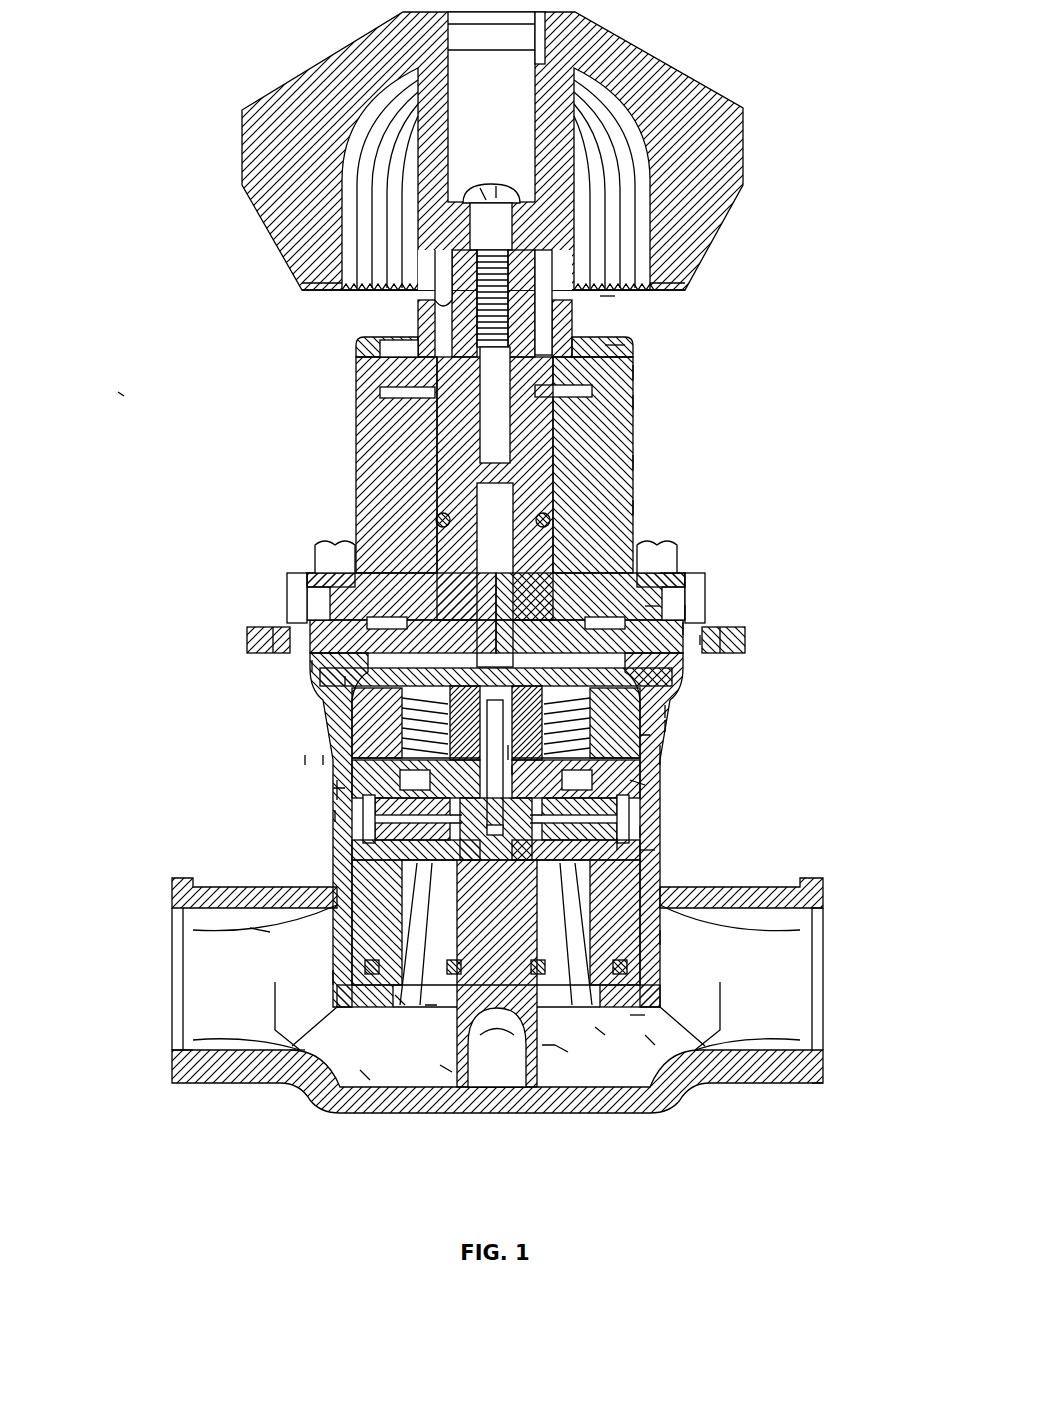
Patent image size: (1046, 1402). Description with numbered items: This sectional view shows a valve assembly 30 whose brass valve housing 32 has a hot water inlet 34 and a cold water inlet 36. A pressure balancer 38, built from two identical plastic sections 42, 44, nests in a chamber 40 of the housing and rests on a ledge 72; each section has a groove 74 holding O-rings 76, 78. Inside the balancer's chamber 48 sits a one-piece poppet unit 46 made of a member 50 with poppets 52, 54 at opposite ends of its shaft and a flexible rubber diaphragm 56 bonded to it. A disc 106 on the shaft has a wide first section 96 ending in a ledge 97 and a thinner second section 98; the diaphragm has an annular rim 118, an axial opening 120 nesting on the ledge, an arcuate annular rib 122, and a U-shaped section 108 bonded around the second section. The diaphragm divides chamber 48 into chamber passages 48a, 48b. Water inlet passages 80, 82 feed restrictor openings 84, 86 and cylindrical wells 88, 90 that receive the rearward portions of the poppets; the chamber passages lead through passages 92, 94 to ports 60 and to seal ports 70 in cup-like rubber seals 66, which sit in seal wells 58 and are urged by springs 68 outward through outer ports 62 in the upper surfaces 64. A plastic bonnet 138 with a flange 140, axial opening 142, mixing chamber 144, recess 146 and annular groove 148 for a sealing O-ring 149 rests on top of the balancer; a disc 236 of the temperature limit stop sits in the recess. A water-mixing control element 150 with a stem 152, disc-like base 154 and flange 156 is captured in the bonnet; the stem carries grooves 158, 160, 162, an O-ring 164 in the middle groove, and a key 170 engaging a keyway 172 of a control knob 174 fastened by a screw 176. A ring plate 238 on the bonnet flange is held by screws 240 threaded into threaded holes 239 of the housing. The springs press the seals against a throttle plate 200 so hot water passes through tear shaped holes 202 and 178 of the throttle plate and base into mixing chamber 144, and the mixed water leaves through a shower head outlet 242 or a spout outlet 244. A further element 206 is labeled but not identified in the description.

The valve assembly 30 is at (122, 394).
The valve housing 32 is at (822, 1086).
The hot water inlet 34 is at (183, 1052).
The cold water inlet 36 is at (822, 910).
The pressure balancer 38 is at (645, 832).
The chamber 40 is at (178, 975).
The plastic section 42 is at (332, 976).
The plastic section 44 is at (660, 937).
The one-piece poppet unit 46 is at (632, 845).
The chamber 48 is at (265, 930).
The chamber passage 48a is at (365, 1075).
The chamber passage 48b is at (562, 1050).
The member 50 is at (345, 850).
The poppet 52 is at (345, 866).
The poppet 54 is at (652, 856).
The flexible diaphragm 56 is at (453, 672).
The seal well 58 is at (305, 760).
The port 60 is at (342, 790).
The outer port 62 is at (345, 705).
The upper surface 64 is at (350, 740).
The cup-like rubber seal 66 is at (325, 760).
The spring 68 is at (336, 788).
The port 70 is at (330, 682).
The ledge 72 is at (652, 1040).
The groove 74 is at (430, 1010).
The O-ring 76 is at (296, 1050).
The O-ring 78 is at (637, 1020).
The water inlet passage 80 is at (400, 1000).
The water inlet passage 82 is at (600, 1032).
The restrictor opening 84 is at (425, 880).
The restrictor opening 86 is at (645, 926).
The cylindrical well 88 is at (345, 828).
The cylindrical well 90 is at (645, 805).
The passage 92 is at (335, 816).
The passage 94 is at (645, 785).
The first section 96 is at (514, 770).
The ledge 97 is at (512, 752).
The second section 98 is at (520, 748).
The disc 106 is at (545, 817).
The U shaped section 108 is at (476, 777).
The annular circular rim 118 is at (487, 672).
The axial opening 120 is at (496, 829).
The arcuate annular rib 122 is at (534, 672).
The plastic bonnet 138 is at (636, 425).
The flange 140 is at (690, 585).
The axial opening 142 is at (636, 372).
The chamber 144 is at (290, 612).
The recess 146 is at (612, 345).
The annular groove 148 is at (690, 628).
The O-ring 149 is at (705, 640).
The water-mixing control element 150 is at (434, 410).
The stem 152 is at (455, 388).
The disc-like base 154 is at (690, 612).
The flange 156 is at (665, 575).
The annular groove 158 is at (636, 400).
The intermediate groove 160 is at (636, 460).
The annular groove 162 is at (636, 505).
The O-ring 164 is at (436, 518).
The key 170 is at (425, 312).
The keyway 172 is at (440, 268).
The control knob 174 is at (696, 100).
The screw 176 is at (479, 188).
The tear shaped hole 178 is at (316, 666).
The throttle plate 200 is at (655, 606).
The tear shaped hole 202 is at (350, 682).
The stop surface 206 is at (330, 656).
The disc 236 is at (605, 296).
The ring plate 238 is at (362, 342).
The threaded holes 239 is at (262, 634).
The screws 240 is at (333, 560).
The shower head outlet 242 is at (476, 1060).
The spout outlet 244 is at (446, 1072).